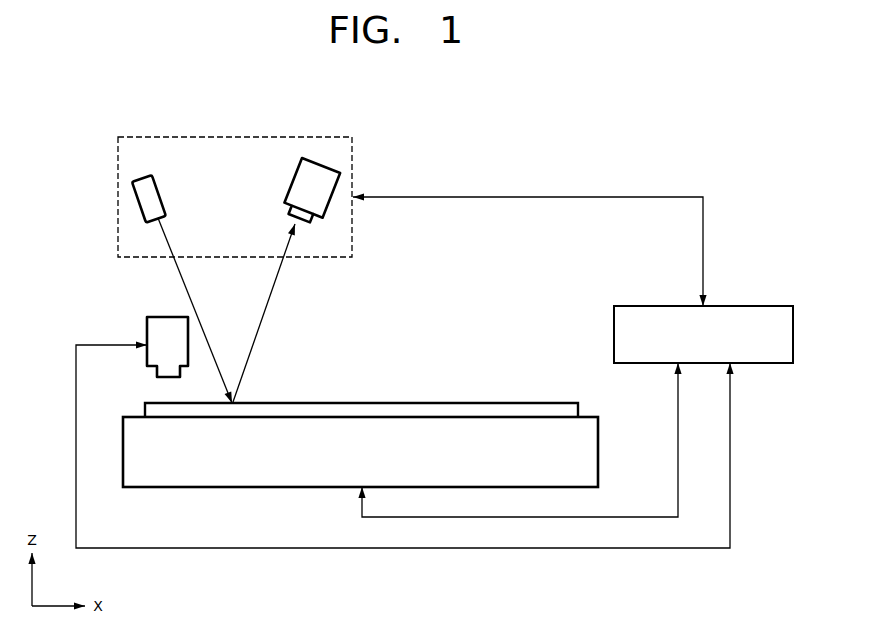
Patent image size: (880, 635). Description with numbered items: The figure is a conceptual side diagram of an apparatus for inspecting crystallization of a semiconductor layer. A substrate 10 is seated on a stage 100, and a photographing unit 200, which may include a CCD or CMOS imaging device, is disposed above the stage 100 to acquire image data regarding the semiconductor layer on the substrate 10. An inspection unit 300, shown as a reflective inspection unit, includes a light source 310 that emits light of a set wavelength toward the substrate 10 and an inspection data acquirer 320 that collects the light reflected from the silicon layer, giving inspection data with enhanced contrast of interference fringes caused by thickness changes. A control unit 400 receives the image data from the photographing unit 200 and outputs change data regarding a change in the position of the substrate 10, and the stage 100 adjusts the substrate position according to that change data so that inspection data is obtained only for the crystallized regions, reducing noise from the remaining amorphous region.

The substrate 10 is at (580, 407).
The stage 100 is at (593, 455).
The photographing unit 200 is at (148, 327).
The inspection unit 300 is at (236, 137).
The light source 310 is at (152, 178).
The inspection data acquirer 320 is at (322, 172).
The control unit 400 is at (749, 306).